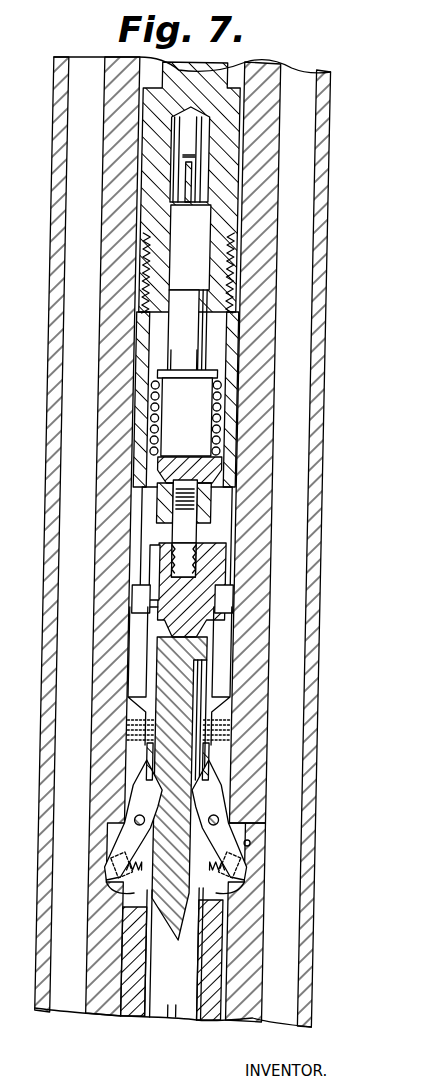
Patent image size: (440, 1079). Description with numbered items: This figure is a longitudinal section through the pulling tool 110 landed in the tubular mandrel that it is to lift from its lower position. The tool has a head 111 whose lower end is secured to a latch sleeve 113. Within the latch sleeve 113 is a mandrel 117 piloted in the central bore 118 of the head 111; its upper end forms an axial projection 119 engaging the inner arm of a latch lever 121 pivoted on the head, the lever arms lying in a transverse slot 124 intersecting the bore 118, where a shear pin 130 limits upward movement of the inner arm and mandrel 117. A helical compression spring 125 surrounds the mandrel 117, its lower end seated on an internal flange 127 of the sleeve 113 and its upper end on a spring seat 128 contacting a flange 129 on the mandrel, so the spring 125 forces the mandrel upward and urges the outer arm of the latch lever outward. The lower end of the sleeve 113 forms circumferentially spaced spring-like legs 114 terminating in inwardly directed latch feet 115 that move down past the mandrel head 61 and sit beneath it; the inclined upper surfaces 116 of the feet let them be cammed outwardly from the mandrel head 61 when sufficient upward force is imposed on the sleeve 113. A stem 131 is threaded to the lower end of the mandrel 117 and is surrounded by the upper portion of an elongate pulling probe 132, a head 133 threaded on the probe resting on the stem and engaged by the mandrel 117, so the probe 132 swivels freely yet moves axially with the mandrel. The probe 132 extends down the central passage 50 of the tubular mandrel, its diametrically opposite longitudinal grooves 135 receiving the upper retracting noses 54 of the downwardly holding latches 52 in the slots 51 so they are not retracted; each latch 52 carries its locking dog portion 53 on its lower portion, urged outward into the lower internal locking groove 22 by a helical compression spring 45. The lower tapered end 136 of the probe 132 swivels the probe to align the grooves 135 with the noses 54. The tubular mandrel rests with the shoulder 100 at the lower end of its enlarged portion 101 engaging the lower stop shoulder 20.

The head 111 is at (210, 100).
The shear pin 130 is at (192, 156).
The transverse slot 124 is at (190, 178).
The latch lever 121 is at (200, 188).
The axial projection 119 is at (200, 228).
The central bore 118 is at (174, 278).
The pulling tool 110 is at (246, 348).
The flange 129 is at (185, 368).
The latch sleeve 113 is at (242, 388).
The spring seat 128 is at (160, 376).
The mandrel 117 is at (196, 420).
The helical compression spring 125 is at (158, 432).
The internal flange 127 is at (162, 474).
The spring-like legs 114 is at (243, 515).
The stem 131 is at (196, 531).
The head 133 is at (166, 535).
The mandrel head 61 is at (162, 560).
The upper surfaces 116 is at (233, 568).
The latch feet 115 is at (150, 600).
The pulling probe 132 is at (219, 651).
The enlarged mandrel portion 101 is at (148, 707).
The elongate slots 51 is at (144, 738).
The longitudinal grooves 135 is at (196, 730).
The retracting nose 54 is at (174, 795).
The latches 52 is at (143, 810).
The lower internal locking groove 22 is at (258, 840).
The dog portion 53 is at (146, 876).
The lower stop shoulder 20 is at (140, 888).
The shoulder 100 is at (243, 893).
The helical compression spring 45 is at (144, 920).
The lower tapered end 136 is at (184, 946).
The central passage 50 is at (193, 1012).